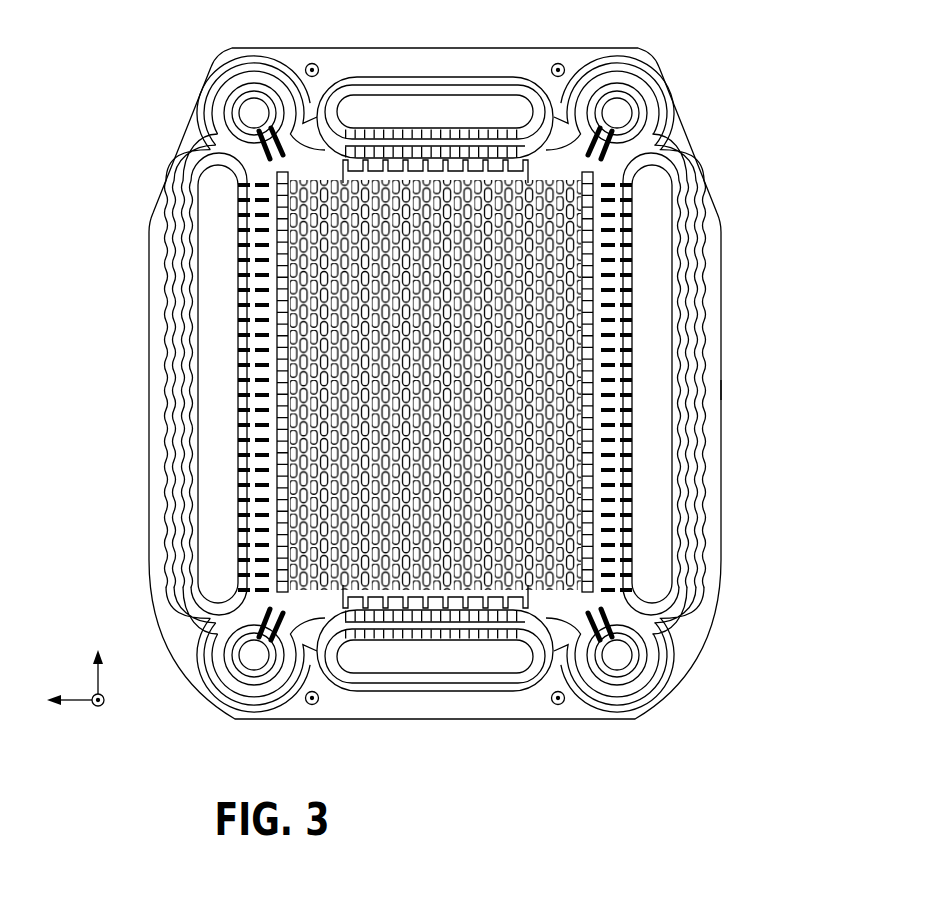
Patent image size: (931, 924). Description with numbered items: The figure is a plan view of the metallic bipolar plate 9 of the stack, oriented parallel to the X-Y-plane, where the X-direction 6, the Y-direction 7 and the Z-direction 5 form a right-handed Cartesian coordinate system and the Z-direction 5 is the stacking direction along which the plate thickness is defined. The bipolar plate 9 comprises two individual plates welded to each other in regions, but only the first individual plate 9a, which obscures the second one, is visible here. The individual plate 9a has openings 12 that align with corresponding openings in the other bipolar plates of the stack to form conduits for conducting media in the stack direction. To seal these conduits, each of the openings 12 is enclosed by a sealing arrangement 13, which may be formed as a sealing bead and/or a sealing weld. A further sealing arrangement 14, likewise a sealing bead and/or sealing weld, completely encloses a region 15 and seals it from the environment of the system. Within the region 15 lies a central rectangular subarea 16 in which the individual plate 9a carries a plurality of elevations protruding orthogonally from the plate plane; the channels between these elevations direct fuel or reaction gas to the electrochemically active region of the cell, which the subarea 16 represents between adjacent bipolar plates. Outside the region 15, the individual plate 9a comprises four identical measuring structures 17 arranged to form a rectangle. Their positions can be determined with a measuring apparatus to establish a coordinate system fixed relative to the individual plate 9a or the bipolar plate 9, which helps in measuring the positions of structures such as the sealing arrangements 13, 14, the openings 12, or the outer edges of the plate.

The Z-direction 5 is at (104, 704).
The X-direction 6 is at (100, 678).
The Y-direction 7 is at (75, 700).
The metallic bipolar plate 9 is at (722, 530).
The first individual plate 9a is at (722, 390).
The openings 12 is at (253, 111).
The sealing arrangements 13 is at (263, 73).
The further sealing arrangement 14 is at (198, 117).
The region 15 is at (207, 138).
The central rectangular subarea 16 is at (314, 340).
The measuring structures 17 is at (311, 63).